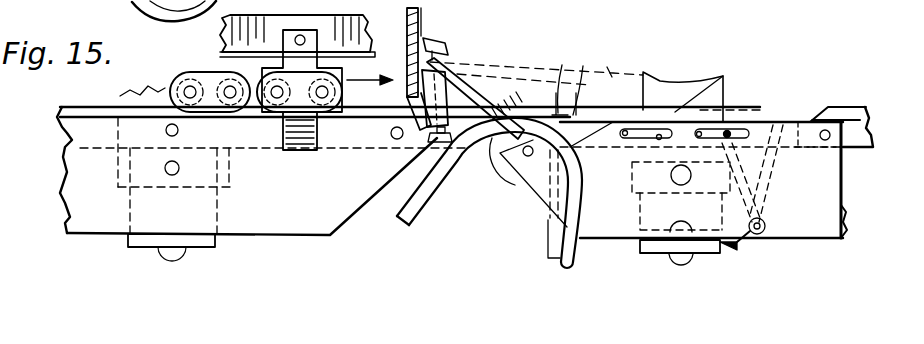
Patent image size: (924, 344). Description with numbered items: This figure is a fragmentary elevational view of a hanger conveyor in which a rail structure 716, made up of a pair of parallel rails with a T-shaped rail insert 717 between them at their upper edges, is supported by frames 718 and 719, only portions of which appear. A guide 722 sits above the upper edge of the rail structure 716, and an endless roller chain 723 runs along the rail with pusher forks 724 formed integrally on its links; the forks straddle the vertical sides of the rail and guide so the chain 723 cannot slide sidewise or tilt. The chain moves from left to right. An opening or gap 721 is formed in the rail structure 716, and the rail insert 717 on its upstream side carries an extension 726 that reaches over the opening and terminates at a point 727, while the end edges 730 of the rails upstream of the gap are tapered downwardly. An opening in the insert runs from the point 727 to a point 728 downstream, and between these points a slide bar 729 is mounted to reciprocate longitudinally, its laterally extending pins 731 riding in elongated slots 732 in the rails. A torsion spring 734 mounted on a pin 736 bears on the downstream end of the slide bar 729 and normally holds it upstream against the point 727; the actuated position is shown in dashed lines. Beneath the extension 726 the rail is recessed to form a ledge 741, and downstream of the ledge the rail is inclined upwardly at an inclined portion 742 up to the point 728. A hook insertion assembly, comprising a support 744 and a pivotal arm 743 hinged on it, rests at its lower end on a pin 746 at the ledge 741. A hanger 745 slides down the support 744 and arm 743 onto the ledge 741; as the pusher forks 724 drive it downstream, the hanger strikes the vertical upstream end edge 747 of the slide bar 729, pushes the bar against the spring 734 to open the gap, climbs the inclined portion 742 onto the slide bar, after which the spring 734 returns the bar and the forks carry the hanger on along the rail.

The rail structure 716 is at (852, 174).
The rail insert 717 is at (855, 124).
The frame 718 is at (697, 258).
The frame 719 is at (196, 252).
The opening or gap 721 is at (489, 140).
The guide 722 is at (232, 30).
The endless roller chain 723 is at (168, 82).
The pusher forks 724 is at (297, 152).
The extension 726 is at (537, 88).
The point 727 is at (604, 81).
The point 728 is at (678, 81).
The slide bar 729 is at (684, 110).
The end edges 730 is at (368, 207).
The pins 731 is at (625, 138).
The elongated slots 732 is at (697, 138).
The torsion spring 734 is at (777, 184).
The pin 736 is at (763, 232).
The ledge 741 is at (526, 158).
The inclined portion 742 is at (636, 88).
The pivotal arm 743 is at (477, 100).
The support 744 is at (420, 33).
The hanger 745 is at (575, 260).
The pin 746 is at (548, 208).
The vertical upstream end edge 747 is at (571, 81).